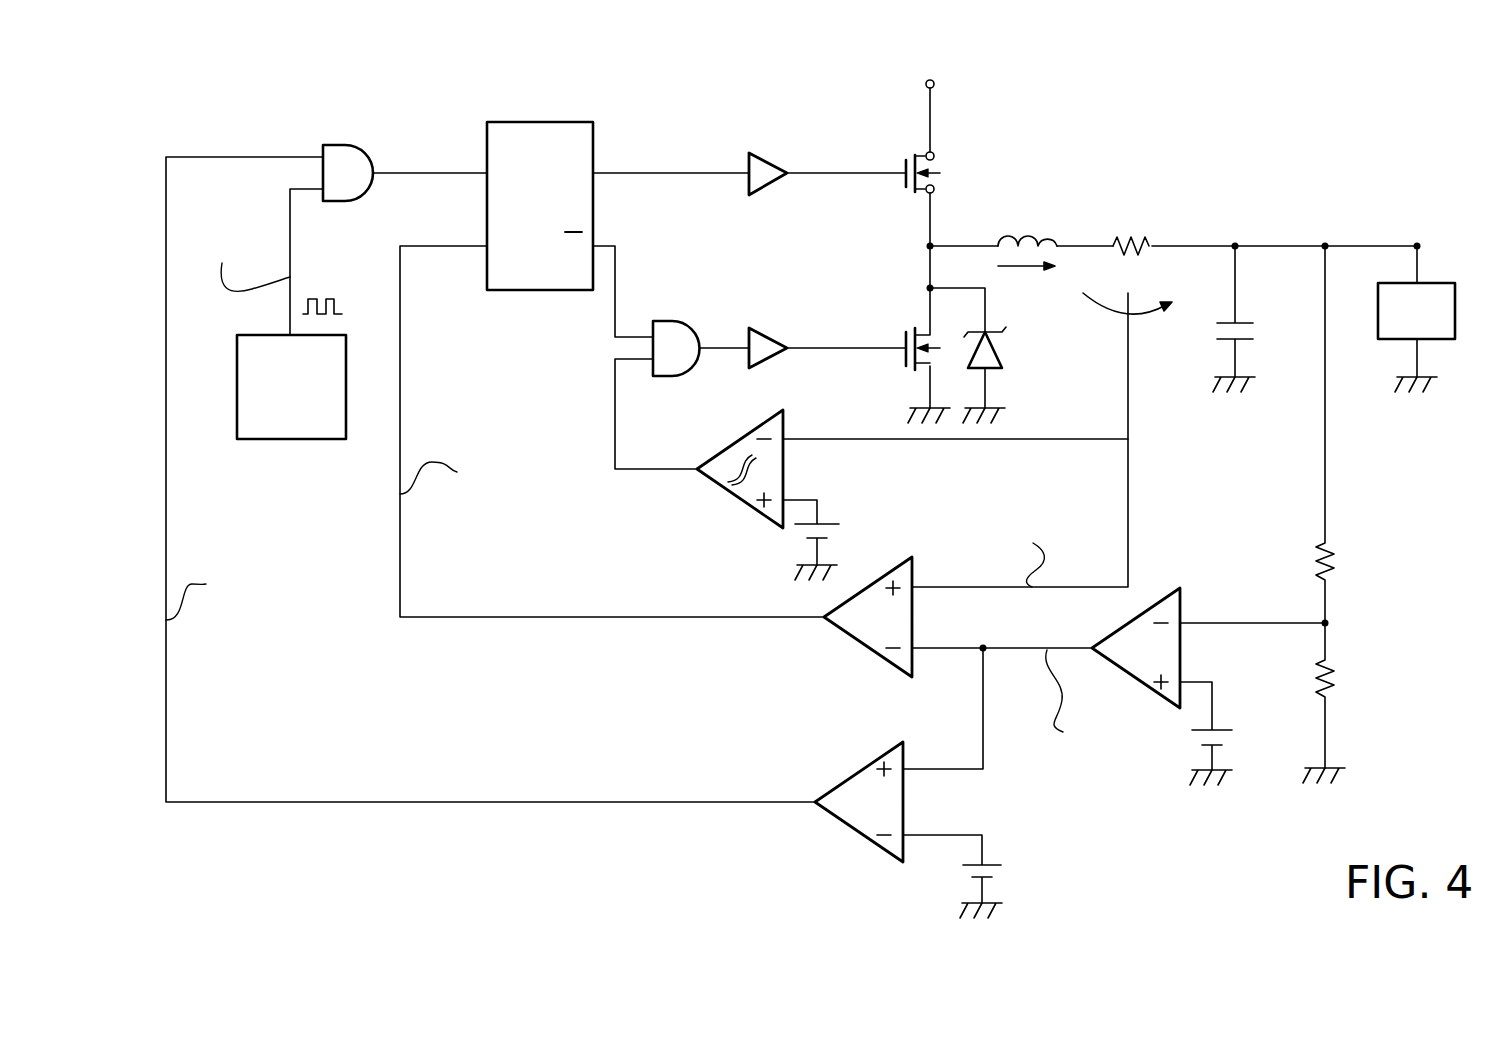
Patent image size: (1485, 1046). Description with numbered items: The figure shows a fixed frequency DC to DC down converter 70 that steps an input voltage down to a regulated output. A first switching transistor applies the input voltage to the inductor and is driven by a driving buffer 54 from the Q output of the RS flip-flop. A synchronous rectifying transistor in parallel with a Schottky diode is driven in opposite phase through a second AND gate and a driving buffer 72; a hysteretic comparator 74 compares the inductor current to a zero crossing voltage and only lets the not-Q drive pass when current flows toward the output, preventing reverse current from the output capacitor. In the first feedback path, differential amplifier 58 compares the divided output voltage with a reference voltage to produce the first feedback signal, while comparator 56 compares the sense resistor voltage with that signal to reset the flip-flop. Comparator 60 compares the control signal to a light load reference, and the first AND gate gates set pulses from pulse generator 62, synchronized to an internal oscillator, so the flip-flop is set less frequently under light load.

The fixed frequency DC to DC down converter 70 is at (1134, 126).
The driving buffer 54 is at (765, 152).
The driving buffer 72 is at (765, 327).
The hysteretic comparator 74 is at (748, 505).
The comparator 56 is at (872, 652).
The differential amplifier 58 is at (1148, 684).
The comparator 60 is at (866, 764).
The pulse generator 62 is at (318, 432).